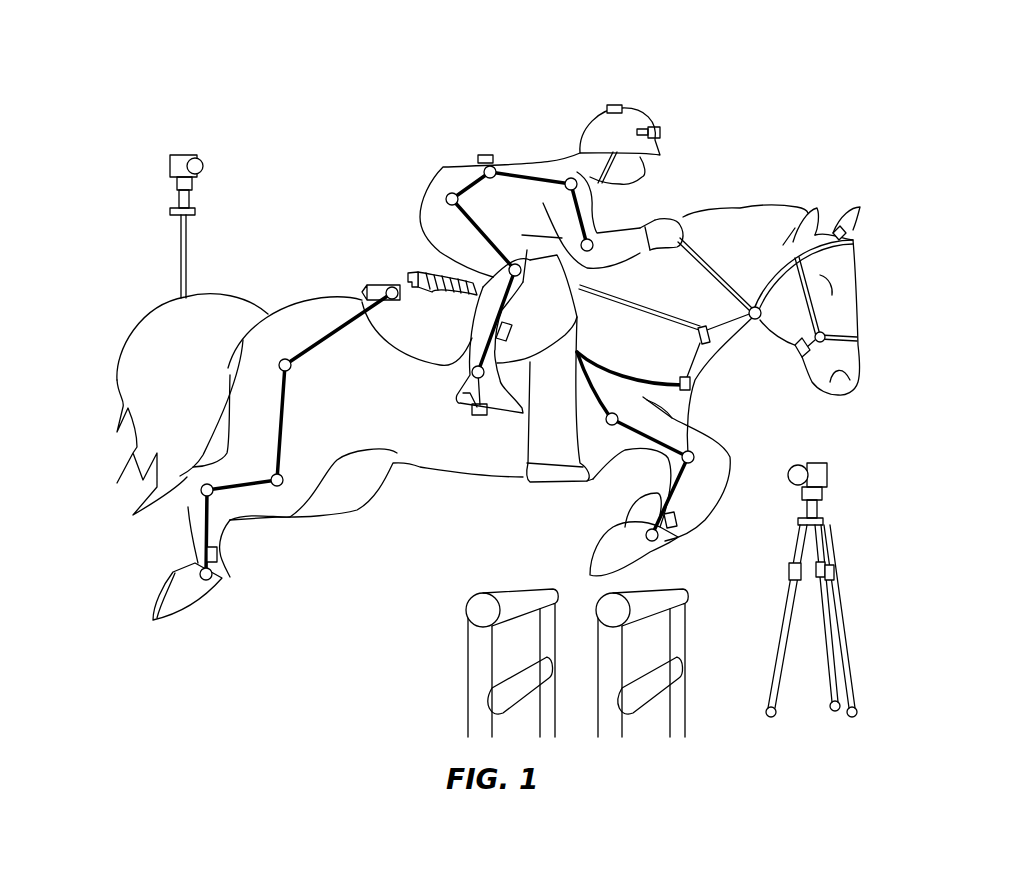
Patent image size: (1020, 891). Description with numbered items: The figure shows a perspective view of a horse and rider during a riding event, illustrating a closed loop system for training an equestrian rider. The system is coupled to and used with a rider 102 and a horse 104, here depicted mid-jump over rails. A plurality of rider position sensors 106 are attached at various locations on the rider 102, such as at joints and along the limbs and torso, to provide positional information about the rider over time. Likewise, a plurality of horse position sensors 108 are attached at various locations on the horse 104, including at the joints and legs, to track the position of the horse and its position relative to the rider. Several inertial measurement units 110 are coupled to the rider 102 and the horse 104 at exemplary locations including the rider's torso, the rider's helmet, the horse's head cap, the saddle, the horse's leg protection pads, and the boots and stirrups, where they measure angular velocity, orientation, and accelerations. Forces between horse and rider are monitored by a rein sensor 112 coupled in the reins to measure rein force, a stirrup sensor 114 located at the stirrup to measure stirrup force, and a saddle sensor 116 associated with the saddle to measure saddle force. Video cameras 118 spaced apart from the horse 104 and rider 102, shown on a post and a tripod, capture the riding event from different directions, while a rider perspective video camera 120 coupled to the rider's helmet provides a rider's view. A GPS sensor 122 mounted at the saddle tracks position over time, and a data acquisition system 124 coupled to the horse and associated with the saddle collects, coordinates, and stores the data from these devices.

The rider 102 is at (590, 147).
The horse 104 is at (167, 300).
The rider position sensors 106 is at (472, 378).
The horse position sensors 108 is at (285, 362).
The inertial measurement units 110 is at (405, 273).
The rein sensor 112 is at (798, 352).
The stirrup sensor 114 is at (476, 415).
The saddle sensor 116 is at (412, 275).
The video cameras 118 is at (183, 160).
The rider perspective video camera 120 is at (658, 130).
The GPS sensor 122 is at (365, 288).
The data acquisition system 124 is at (386, 325).